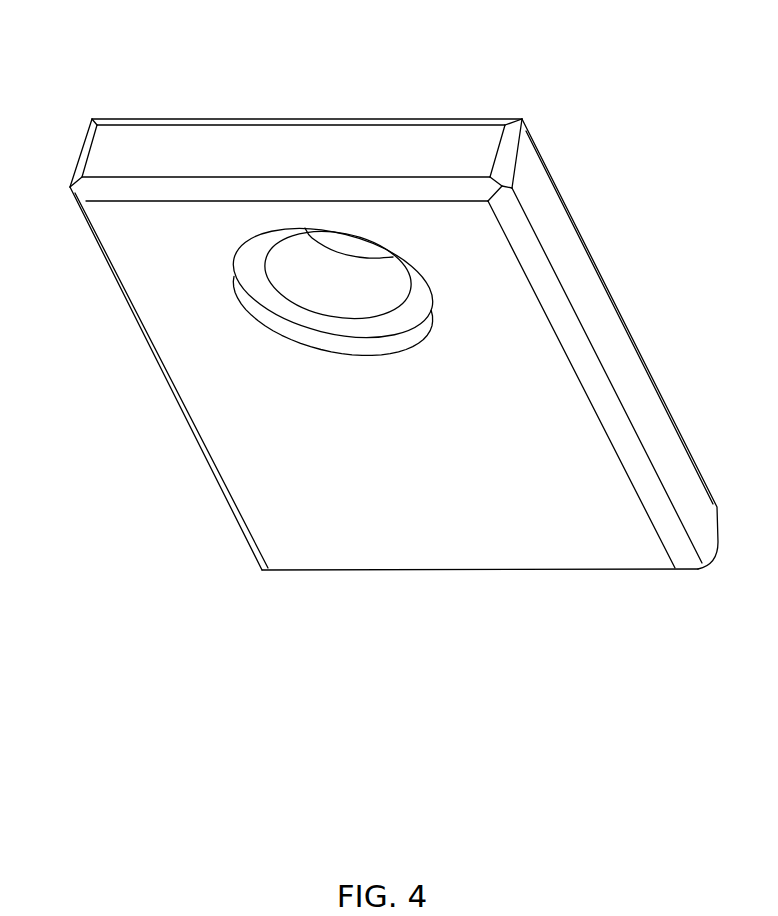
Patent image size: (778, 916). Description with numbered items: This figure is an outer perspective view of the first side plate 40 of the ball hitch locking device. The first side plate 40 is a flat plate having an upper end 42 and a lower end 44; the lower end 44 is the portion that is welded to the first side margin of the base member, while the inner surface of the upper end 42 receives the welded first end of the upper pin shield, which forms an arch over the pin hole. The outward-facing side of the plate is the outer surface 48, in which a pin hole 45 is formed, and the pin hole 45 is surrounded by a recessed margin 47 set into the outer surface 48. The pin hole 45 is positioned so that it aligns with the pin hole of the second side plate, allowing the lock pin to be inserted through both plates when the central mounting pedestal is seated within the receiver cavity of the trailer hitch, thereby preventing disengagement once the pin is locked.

The first side plate 40 is at (368, 337).
The upper end 42 is at (214, 161).
The lower end 44 is at (473, 568).
The pin hole 45 is at (318, 262).
The recessed margin 47 is at (317, 340).
The outer surface 48 is at (394, 431).